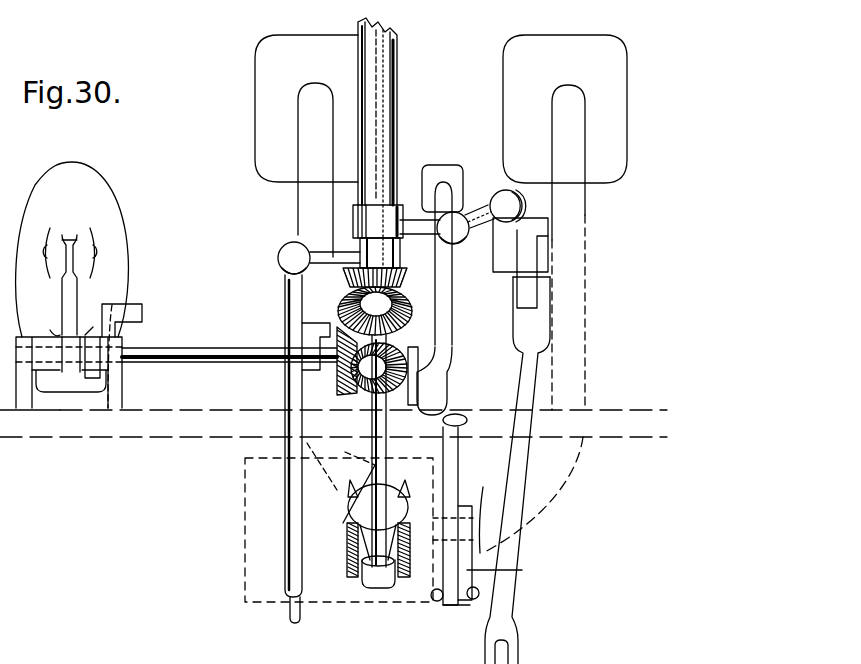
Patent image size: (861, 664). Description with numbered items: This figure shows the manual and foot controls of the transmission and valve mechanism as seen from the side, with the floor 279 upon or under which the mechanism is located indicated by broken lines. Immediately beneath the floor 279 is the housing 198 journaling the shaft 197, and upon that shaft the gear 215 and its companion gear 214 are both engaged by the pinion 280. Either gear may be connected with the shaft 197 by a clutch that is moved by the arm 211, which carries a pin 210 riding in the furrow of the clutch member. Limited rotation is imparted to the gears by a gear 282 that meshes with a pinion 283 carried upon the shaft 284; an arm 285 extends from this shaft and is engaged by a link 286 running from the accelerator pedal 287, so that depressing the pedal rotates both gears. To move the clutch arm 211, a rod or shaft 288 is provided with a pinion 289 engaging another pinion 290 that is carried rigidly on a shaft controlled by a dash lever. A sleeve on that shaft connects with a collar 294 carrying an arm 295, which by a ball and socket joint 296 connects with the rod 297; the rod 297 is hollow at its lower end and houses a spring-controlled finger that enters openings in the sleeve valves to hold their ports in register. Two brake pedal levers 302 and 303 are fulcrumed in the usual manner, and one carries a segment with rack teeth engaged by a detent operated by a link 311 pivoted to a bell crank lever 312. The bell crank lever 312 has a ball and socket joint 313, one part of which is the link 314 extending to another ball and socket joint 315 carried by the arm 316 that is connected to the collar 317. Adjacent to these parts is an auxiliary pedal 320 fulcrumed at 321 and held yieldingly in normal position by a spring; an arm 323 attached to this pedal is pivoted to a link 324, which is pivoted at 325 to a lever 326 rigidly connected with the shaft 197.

The accelerator pedal 287 is at (112, 218).
The link 286 is at (76, 300).
The arm 285 is at (93, 372).
The shaft 284 is at (220, 350).
The pinion 283 is at (340, 363).
The gear 282 is at (395, 358).
The pinion 289 is at (412, 304).
The pinion 290 is at (390, 277).
The collar 294 is at (360, 250).
The arm 295 is at (315, 250).
The ball and socket joint 296 is at (280, 258).
The rod 297 is at (290, 500).
The brake pedal lever 302 is at (312, 193).
The collar 317 is at (355, 212).
The brake pedal lever 303 is at (585, 270).
The floor 279 is at (615, 420).
The pinion 280 is at (392, 497).
The rod or shaft 288 is at (365, 508).
The pin 210 is at (352, 535).
The gear 215 is at (410, 572).
The arm 211 is at (375, 543).
The gear 214 is at (357, 583).
The housing 198 is at (262, 500).
The auxiliary pedal 320 is at (452, 170).
The ball and socket joint 315 is at (453, 187).
The arm 316 is at (411, 216).
The link 314 is at (473, 210).
The ball and socket joint 313 is at (505, 198).
The bell crank lever 312 is at (520, 245).
The link 311 is at (517, 518).
The lever 326 is at (522, 572).
The fulcrum 321 is at (475, 383).
The arm 323 is at (462, 415).
The link 324 is at (460, 447).
The shaft 197 is at (469, 533).
The pivot 325 is at (468, 605).